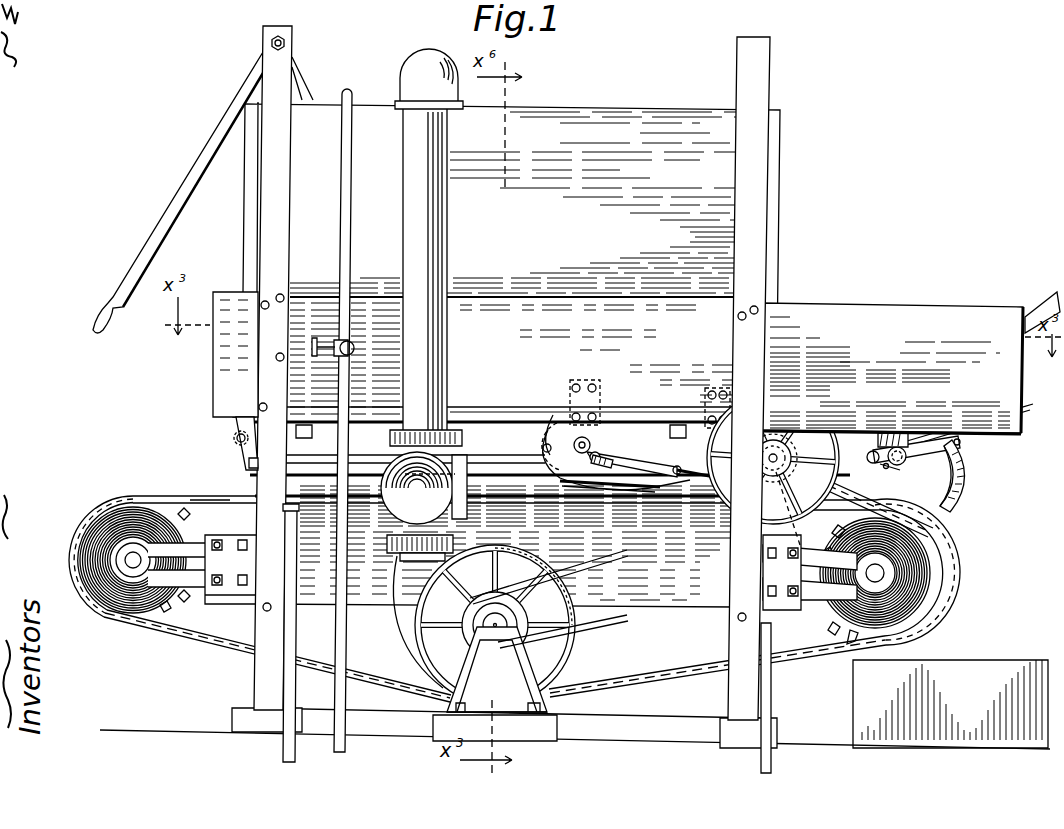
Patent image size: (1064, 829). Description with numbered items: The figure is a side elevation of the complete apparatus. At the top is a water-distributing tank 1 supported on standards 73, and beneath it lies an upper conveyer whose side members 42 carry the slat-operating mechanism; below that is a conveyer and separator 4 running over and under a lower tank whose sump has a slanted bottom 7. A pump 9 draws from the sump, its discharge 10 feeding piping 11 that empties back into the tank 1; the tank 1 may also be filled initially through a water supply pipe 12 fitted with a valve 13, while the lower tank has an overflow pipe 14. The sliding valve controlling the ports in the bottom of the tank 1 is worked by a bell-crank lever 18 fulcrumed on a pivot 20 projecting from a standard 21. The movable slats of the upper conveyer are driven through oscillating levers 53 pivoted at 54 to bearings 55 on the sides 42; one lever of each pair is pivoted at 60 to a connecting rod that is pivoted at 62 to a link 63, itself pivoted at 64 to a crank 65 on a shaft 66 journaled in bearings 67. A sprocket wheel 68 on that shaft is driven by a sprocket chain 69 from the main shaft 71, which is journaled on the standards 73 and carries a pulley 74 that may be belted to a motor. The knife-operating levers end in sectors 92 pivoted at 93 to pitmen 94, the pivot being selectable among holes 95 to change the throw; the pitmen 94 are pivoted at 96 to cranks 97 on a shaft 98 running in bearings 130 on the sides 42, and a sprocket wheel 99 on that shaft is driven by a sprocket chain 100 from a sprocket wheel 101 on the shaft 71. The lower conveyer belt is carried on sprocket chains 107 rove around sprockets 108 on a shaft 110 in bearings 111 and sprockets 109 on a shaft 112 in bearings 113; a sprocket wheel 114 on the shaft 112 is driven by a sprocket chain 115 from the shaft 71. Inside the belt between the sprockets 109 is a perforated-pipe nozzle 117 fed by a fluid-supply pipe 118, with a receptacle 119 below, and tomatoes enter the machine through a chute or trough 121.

The water-distributing tank 1 is at (606, 102).
The conveyer and separator 4 is at (209, 490).
The bottom of the sump 7 is at (814, 299).
The pump 9 is at (420, 626).
The discharge of the pump 10 is at (405, 455).
The piping 11 is at (425, 222).
The water supply pipe 12 is at (335, 615).
The valve 13 is at (352, 348).
The overflow pipe 14 is at (290, 678).
The bell-crank lever 18 is at (243, 92).
The pivot 20 is at (270, 43).
The standard 21 is at (268, 30).
The side members 42 is at (216, 370).
The oscillating levers 53 is at (248, 456).
The pivot 54 is at (238, 440).
The bearings 55 is at (240, 396).
The pivot 60 is at (255, 470).
The pivot 62 is at (676, 481).
The link 63 is at (667, 455).
The pivot 64 is at (605, 440).
The crank 65 is at (548, 452).
The shaft 66 is at (566, 442).
The bearings 67 is at (585, 425).
The sprocket wheel 68 is at (620, 447).
The sprocket chain 69 is at (545, 449).
The shaft 71 is at (804, 474).
The standards 73 is at (757, 66).
The pulley 74 is at (832, 478).
The sectors 92 is at (958, 470).
The pivot 93 is at (963, 442).
The pitmen 94 is at (970, 421).
The holes 95 is at (952, 492).
The pivot 96 is at (886, 468).
The cranks 97 is at (904, 480).
The shaft 98 is at (904, 458).
The sprocket wheel 99 is at (876, 442).
The sprocket chain 100 is at (781, 457).
The sprocket wheel 101 is at (747, 520).
The sprocket chains 107 is at (165, 630).
The sprockets 108 is at (100, 538).
The sprockets 109 is at (912, 590).
The shaft 110 is at (130, 552).
The bearings 111 is at (168, 543).
The shaft 112 is at (888, 570).
The bearings 113 is at (888, 576).
The sprocket wheel 114 is at (930, 542).
The sprocket chain 115 is at (935, 522).
The nozzle 117 is at (922, 626).
The fluid-supply pipe 118 is at (765, 686).
The receptacle 119 is at (975, 678).
The chute or trough 121 is at (1042, 302).
The bearings 130 is at (905, 440).